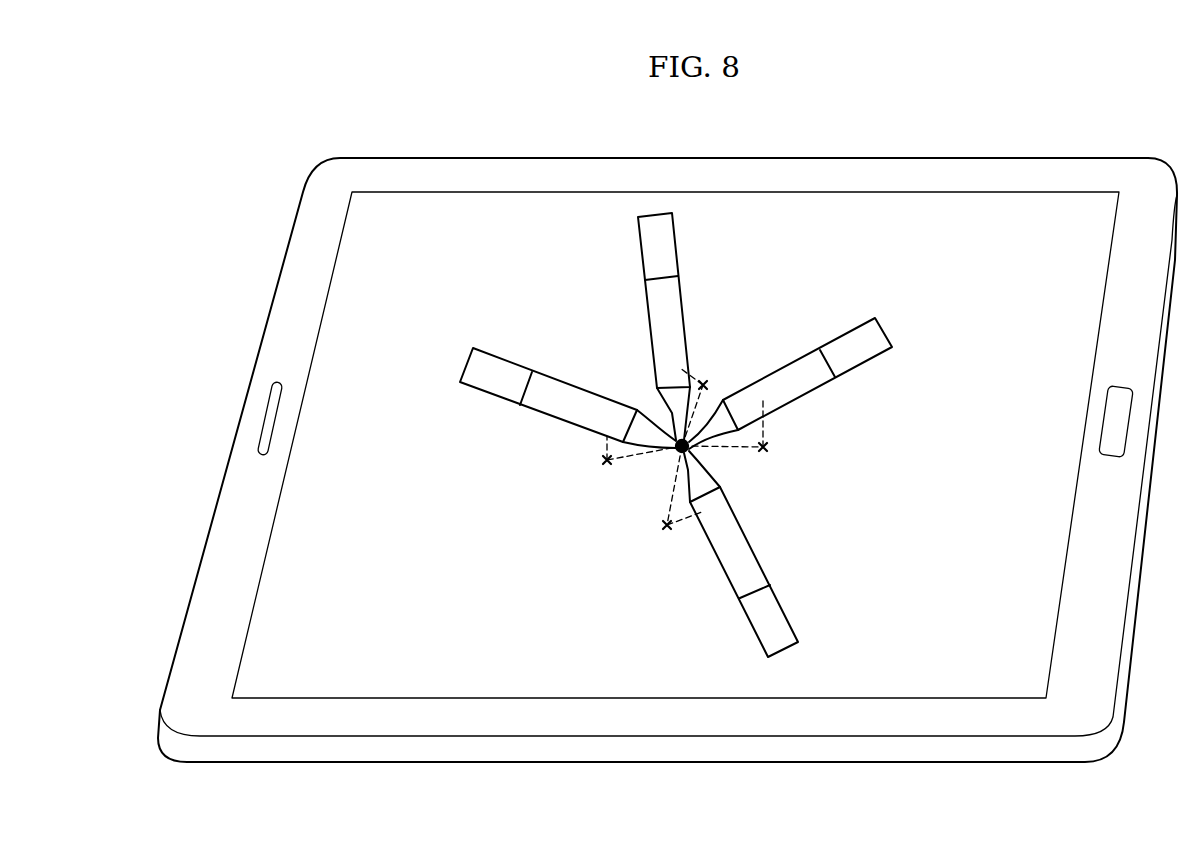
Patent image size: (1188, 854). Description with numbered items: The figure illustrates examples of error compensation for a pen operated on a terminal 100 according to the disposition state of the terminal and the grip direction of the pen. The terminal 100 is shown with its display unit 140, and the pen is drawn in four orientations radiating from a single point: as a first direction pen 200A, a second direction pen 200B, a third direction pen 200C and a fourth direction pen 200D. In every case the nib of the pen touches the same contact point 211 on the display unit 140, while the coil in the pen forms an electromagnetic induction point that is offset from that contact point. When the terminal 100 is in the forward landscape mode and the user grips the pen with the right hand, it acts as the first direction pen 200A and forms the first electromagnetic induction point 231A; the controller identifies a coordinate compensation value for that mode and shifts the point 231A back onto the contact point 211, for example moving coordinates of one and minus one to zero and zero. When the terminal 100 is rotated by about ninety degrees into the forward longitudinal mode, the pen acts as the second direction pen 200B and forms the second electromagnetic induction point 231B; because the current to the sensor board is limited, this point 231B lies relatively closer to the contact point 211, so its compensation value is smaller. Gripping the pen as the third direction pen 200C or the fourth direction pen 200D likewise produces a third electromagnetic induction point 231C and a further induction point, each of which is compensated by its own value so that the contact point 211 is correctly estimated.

The terminal 100 is at (953, 148).
The display unit 140 is at (430, 228).
The first direction pen 200A is at (892, 330).
The second direction pen 200B is at (685, 252).
The third direction pen 200C is at (518, 360).
The fourth direction pen 200D is at (788, 607).
The contact point 211 is at (697, 453).
The first electromagnetic induction point 231A is at (772, 446).
The second electromagnetic induction point 231B is at (708, 375).
The third electromagnetic induction point 231C is at (600, 458).